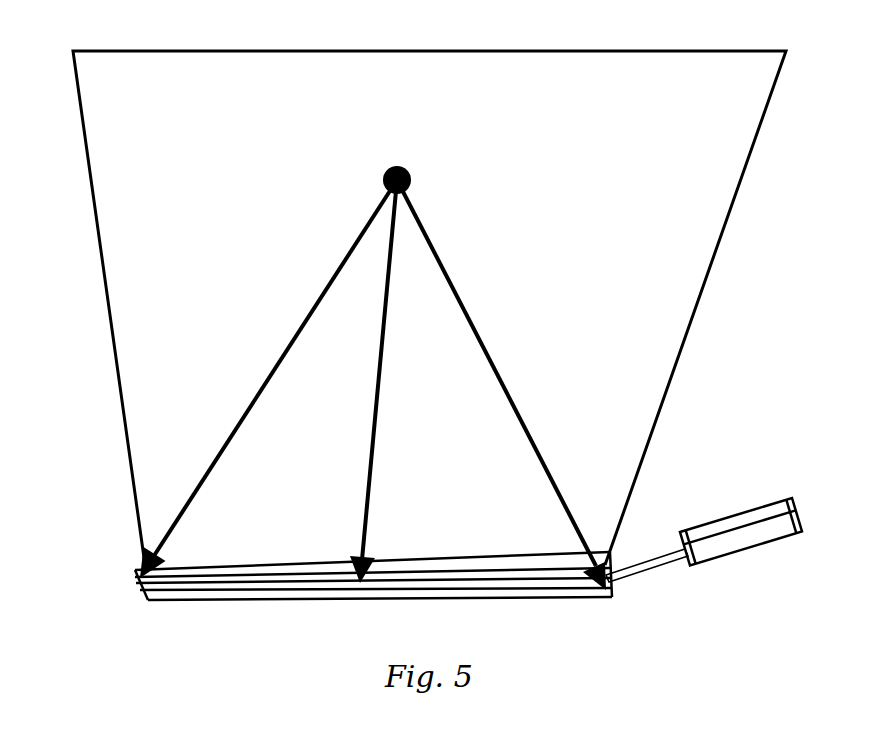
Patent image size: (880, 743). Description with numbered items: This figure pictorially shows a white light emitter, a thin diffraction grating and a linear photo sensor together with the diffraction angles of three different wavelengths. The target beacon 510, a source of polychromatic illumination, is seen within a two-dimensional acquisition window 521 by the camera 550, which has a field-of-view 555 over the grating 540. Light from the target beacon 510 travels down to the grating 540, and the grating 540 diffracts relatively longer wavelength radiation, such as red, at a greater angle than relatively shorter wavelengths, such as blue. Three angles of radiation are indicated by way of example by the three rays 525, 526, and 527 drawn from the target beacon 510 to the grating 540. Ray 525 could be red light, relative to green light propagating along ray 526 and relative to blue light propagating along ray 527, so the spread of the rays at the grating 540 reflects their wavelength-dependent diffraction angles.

The target beacon 510 is at (381, 180).
The two-dimensional acquisition window 521 is at (124, 442).
The ray 525 is at (252, 410).
The ray 526 is at (373, 408).
The ray 527 is at (497, 402).
The grating 540 is at (235, 600).
The camera 550 is at (758, 512).
The field-of-view 555 is at (553, 556).